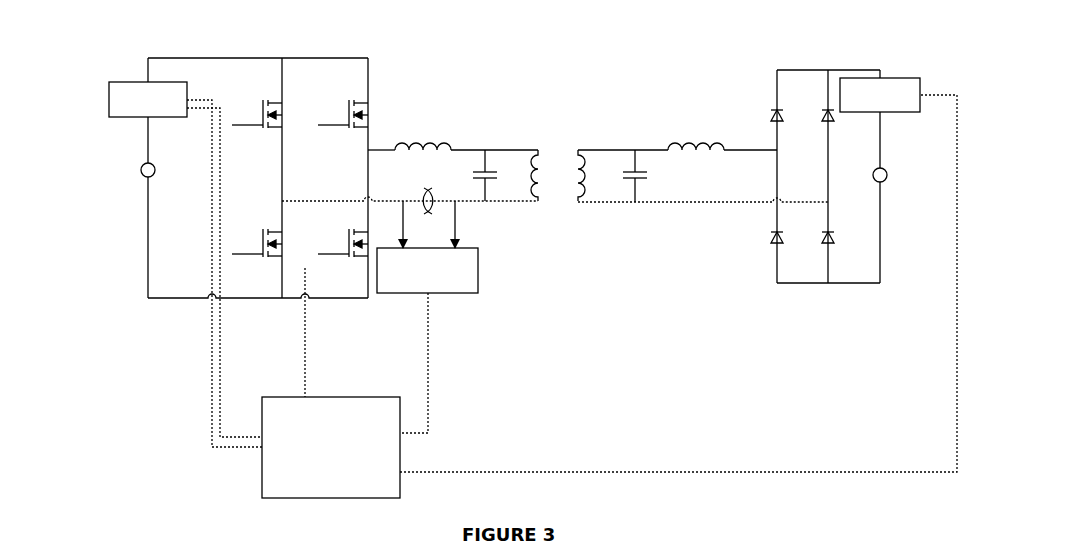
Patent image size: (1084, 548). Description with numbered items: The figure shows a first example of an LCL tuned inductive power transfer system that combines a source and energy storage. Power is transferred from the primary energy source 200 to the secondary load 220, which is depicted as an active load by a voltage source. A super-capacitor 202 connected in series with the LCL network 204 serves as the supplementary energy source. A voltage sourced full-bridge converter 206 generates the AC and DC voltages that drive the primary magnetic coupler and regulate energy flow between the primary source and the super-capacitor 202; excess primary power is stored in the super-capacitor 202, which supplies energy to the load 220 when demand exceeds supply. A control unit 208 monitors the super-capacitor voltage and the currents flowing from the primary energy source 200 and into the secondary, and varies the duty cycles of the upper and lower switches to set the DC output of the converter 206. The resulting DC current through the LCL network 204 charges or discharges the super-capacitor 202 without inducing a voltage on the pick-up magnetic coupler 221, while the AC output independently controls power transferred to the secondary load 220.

The primary energy source 200 is at (135, 191).
The super-capacitor 202 is at (445, 212).
The LCL network 204 is at (500, 132).
The full-bridge converter 206 is at (375, 55).
The control unit 208 is at (257, 477).
The secondary load 220 is at (912, 213).
The pick-up magnetic coupler 221 is at (632, 132).